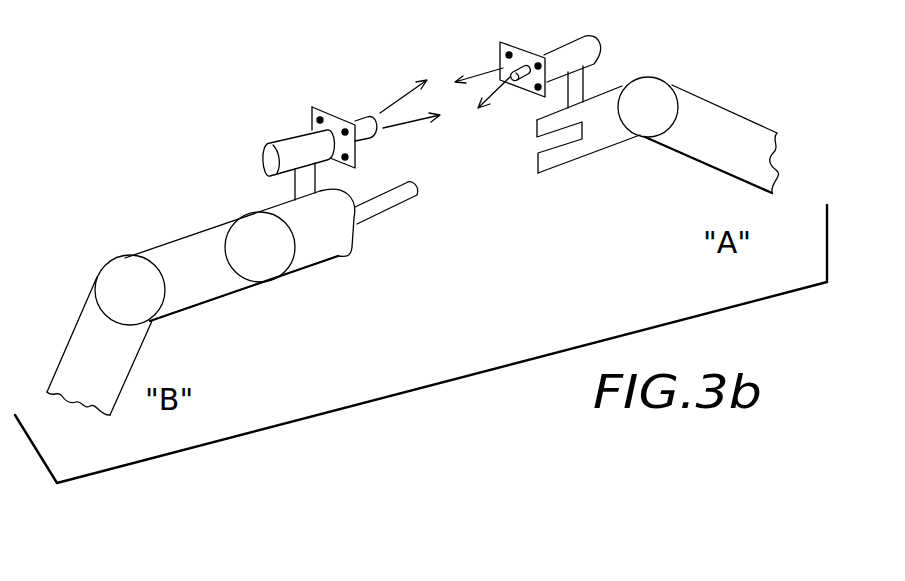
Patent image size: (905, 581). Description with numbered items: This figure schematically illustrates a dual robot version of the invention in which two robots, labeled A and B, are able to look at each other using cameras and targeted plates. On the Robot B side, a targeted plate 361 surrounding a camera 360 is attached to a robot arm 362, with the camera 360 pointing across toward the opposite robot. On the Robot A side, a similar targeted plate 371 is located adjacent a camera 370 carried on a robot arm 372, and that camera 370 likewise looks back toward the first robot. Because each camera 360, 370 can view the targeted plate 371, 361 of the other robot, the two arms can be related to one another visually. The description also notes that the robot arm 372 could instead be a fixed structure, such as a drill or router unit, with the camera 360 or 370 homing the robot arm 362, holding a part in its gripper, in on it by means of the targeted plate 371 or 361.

The camera 360 is at (258, 158).
The targeted plate 361 is at (332, 109).
The robot arm 362 is at (282, 281).
The camera 370 is at (592, 50).
The targeted plate 371 is at (500, 58).
The robot arm 372 is at (678, 153).